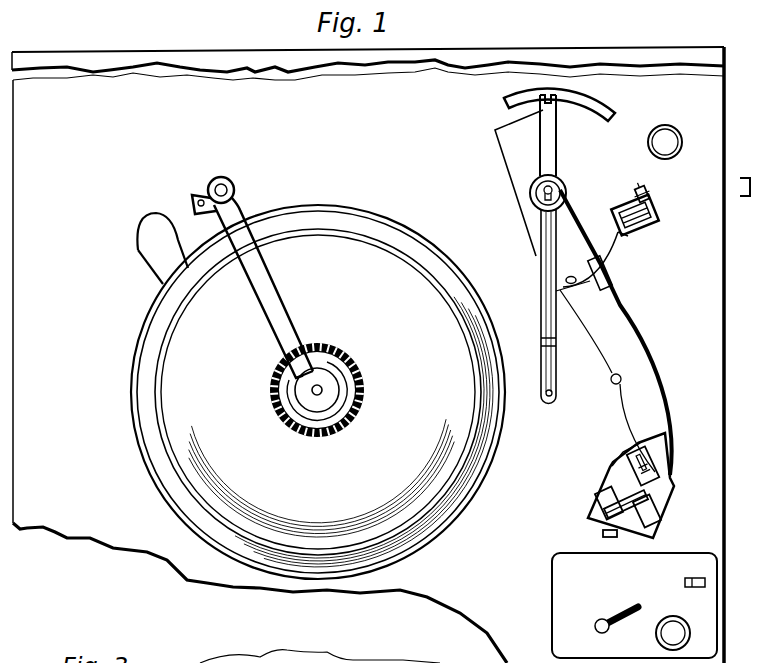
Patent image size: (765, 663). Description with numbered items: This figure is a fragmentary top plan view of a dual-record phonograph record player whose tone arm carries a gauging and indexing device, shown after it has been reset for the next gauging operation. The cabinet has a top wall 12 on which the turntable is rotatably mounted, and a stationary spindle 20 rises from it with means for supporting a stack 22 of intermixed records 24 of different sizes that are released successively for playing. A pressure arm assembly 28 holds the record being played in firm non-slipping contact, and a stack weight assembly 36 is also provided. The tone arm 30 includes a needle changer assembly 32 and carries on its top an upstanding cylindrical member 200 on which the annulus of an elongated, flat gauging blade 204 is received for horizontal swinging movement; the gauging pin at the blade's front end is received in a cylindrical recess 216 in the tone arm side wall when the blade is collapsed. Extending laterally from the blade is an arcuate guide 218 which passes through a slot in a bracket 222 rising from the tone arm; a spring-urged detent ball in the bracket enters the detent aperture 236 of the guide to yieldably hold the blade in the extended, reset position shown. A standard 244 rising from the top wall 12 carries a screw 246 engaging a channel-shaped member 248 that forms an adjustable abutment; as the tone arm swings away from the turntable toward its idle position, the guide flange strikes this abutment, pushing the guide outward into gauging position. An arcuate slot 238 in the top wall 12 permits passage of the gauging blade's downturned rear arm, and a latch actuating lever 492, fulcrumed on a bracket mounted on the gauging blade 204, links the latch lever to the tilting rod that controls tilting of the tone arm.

The top wall 12 is at (47, 92).
The stationary spindle 20 is at (321, 388).
The stack 22 is at (374, 218).
The records 24 is at (458, 272).
The pressure arm assembly 28 is at (147, 261).
The tone arm 30 is at (641, 389).
The needle changer assembly 32 is at (588, 527).
The stack weight assembly 36 is at (287, 308).
The cylindrical member 200 is at (536, 191).
The gauging blade 204 is at (557, 151).
The cylindrical recess 216 is at (612, 385).
The arcuate guide 218 is at (612, 242).
The bracket 222 is at (612, 279).
The detent aperture 236 is at (594, 290).
The arcuate slot 238 is at (618, 104).
The standard 244 is at (656, 215).
The screw 246 is at (649, 195).
The channel-shaped member 248 is at (634, 230).
The latch actuating lever 492 is at (546, 278).